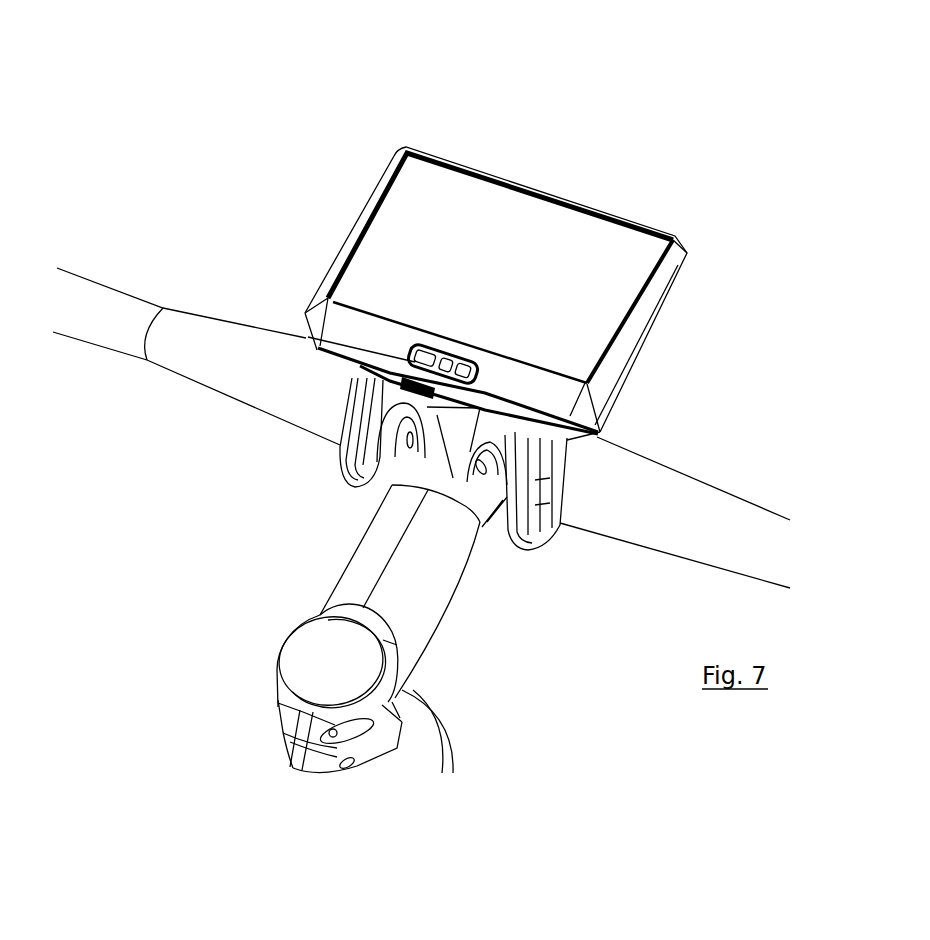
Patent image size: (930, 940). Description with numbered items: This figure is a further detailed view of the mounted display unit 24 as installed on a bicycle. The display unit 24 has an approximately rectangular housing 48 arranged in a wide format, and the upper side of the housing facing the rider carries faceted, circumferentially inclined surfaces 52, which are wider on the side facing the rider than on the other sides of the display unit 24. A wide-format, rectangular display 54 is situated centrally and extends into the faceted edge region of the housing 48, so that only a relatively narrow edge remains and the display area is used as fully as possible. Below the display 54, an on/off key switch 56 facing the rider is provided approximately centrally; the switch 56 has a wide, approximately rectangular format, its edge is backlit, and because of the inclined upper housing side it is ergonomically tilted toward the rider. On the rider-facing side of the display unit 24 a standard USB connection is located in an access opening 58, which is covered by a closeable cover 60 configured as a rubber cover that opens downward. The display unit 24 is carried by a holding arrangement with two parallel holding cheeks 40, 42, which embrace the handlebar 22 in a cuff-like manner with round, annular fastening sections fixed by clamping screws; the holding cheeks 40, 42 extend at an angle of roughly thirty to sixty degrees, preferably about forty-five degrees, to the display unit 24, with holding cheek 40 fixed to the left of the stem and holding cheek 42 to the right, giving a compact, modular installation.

The handlebar 22 is at (677, 497).
The display unit 24 is at (460, 227).
The holding cheek 40 is at (350, 496).
The holding cheek 42 is at (523, 547).
The housing 48 is at (692, 262).
The inclined surface 52 is at (341, 252).
The display 54 is at (461, 185).
The on/off key switch 56 is at (412, 350).
The access opening 58 is at (329, 446).
The closeable cover 60 is at (393, 405).